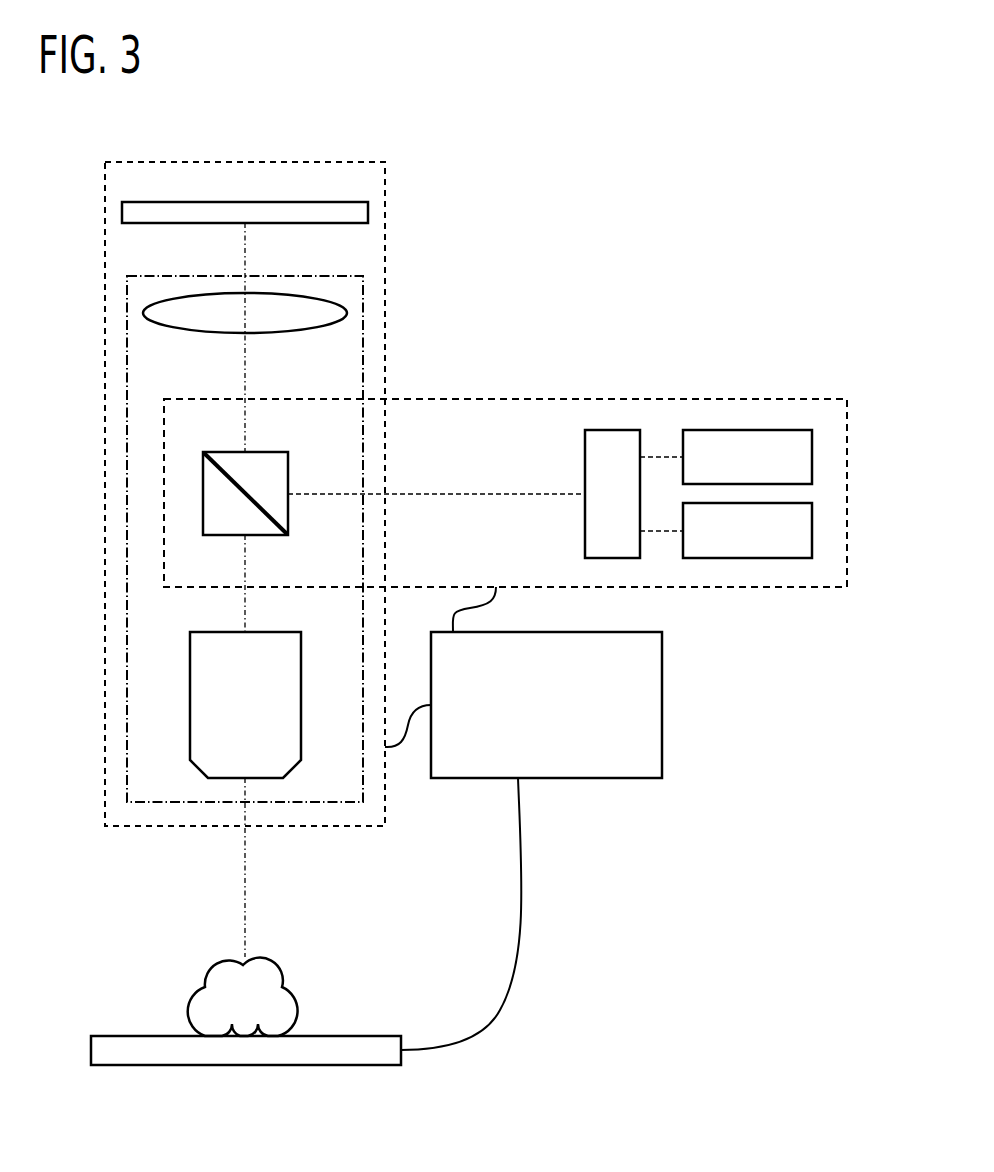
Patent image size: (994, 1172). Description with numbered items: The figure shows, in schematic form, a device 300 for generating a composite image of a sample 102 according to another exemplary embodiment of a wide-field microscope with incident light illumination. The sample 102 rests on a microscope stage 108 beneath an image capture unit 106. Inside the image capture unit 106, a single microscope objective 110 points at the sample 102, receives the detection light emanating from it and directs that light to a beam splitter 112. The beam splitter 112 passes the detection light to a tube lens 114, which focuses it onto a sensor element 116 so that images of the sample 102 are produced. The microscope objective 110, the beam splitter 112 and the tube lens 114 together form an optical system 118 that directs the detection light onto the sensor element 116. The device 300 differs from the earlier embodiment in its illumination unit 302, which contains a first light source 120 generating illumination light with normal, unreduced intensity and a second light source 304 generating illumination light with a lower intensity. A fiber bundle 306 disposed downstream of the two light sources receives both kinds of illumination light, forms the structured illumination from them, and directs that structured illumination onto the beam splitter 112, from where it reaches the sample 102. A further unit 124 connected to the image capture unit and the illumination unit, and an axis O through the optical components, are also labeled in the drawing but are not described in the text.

The device 300 is at (616, 147).
The image capture unit 106 is at (388, 245).
The sensor element 116 is at (130, 213).
The optical system 118 is at (367, 330).
The tube lens 114 is at (152, 313).
The beam splitter 112 is at (218, 510).
The microscope objective 110 is at (208, 706).
The optical axis O is at (245, 884).
The illumination unit 302 is at (490, 392).
The fiber bundle 306 is at (610, 428).
The first light source 120 is at (812, 457).
The second light source 304 is at (812, 531).
The control unit 124 is at (653, 704).
The sample 102 is at (267, 968).
The microscope stage 108 is at (247, 1054).